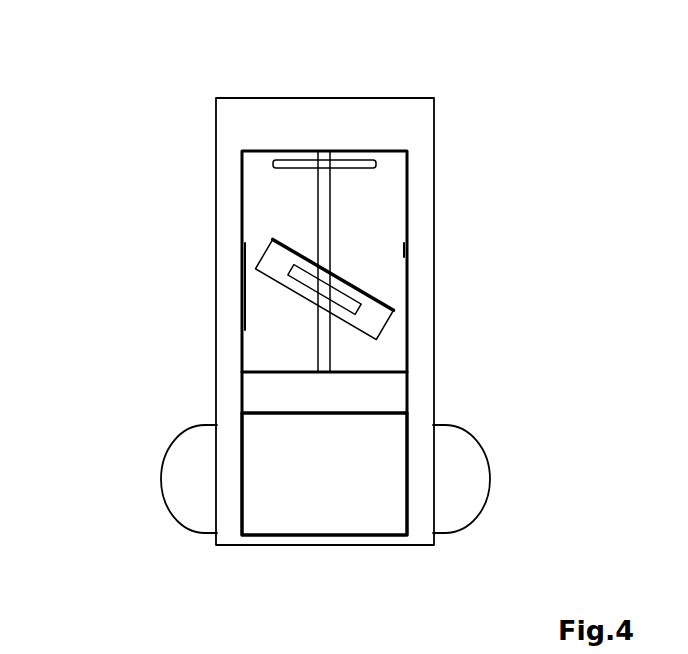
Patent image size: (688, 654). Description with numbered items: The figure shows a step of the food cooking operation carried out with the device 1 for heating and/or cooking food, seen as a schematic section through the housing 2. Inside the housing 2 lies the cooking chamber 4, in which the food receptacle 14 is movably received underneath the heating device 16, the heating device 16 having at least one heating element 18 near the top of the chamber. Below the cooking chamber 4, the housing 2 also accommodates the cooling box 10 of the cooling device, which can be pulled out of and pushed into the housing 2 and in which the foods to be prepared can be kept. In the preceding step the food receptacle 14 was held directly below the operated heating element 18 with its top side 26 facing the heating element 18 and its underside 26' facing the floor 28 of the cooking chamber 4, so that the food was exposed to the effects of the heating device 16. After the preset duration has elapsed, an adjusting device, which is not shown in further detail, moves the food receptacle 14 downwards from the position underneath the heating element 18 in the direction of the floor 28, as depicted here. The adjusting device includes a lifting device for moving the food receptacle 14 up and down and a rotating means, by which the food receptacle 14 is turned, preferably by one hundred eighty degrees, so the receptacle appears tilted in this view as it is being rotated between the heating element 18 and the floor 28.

The device 1 is at (106, 589).
The housing 2 is at (423, 165).
The cooking chamber 4 is at (268, 194).
The cooling box 10 is at (333, 515).
The food receptacle 14 is at (375, 318).
The heating device 16 is at (367, 157).
The heating element 18 is at (287, 160).
The top side 26 is at (403, 271).
The underside 26' is at (197, 305).
The floor 28 is at (270, 371).